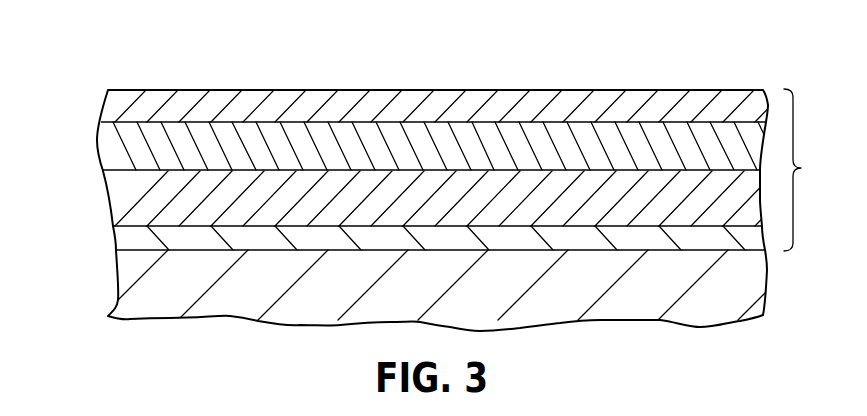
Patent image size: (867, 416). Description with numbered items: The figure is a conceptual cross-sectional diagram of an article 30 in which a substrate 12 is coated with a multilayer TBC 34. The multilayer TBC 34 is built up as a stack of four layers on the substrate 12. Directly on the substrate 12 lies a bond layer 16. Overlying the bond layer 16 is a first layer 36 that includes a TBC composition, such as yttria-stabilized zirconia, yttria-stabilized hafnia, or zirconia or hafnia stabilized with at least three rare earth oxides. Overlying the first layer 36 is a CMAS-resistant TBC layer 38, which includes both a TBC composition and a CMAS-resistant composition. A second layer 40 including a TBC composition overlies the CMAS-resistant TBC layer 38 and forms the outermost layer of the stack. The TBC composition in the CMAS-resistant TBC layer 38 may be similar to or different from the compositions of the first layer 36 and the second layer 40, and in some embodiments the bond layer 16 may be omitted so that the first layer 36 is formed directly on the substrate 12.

The article 30 is at (73, 52).
The second layer including a TBC composition 40 is at (118, 106).
The CMAS-resistant TBC layer 38 is at (118, 147).
The first layer including a TBC composition 36 is at (120, 199).
The bond layer 16 is at (128, 239).
The substrate 12 is at (128, 284).
The multilayer TBC 34 is at (807, 170).